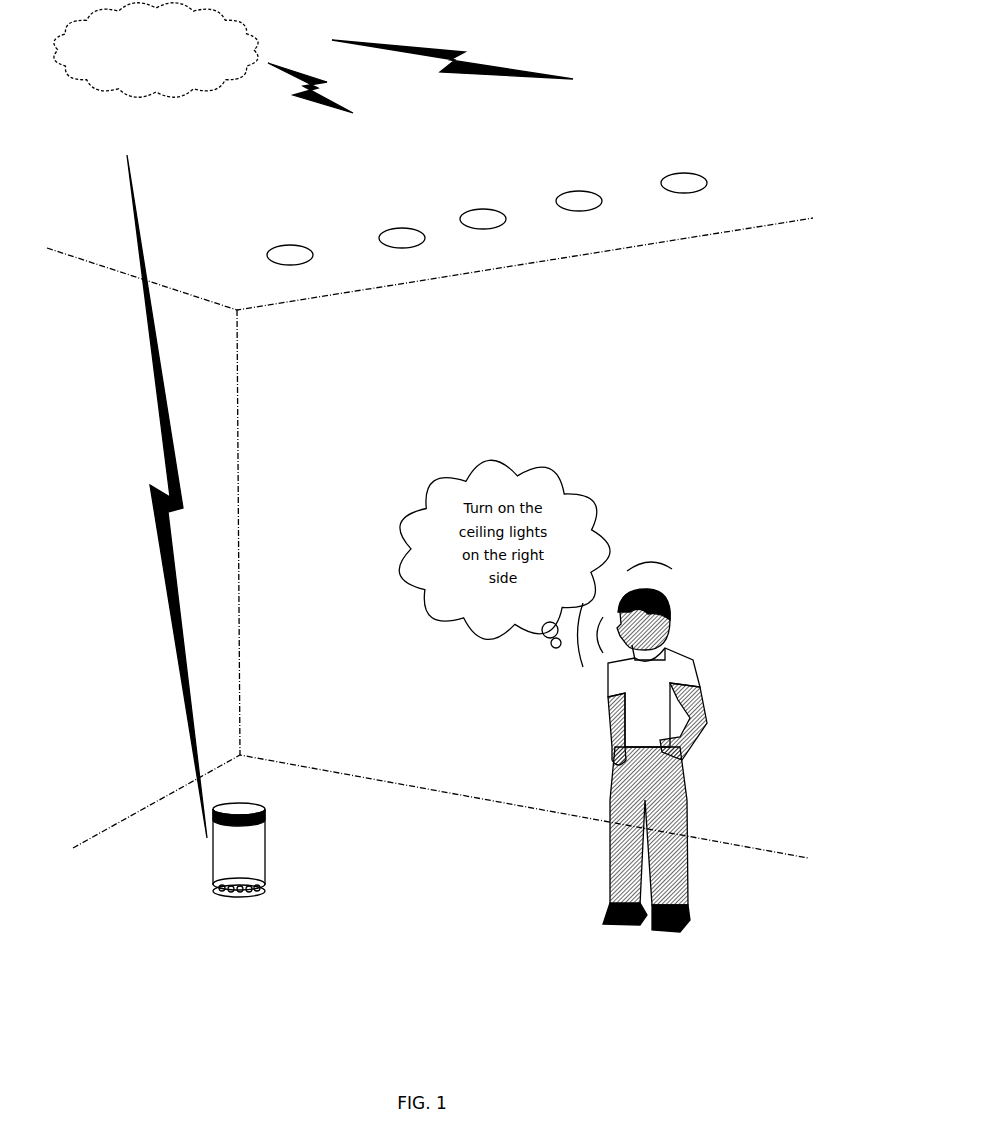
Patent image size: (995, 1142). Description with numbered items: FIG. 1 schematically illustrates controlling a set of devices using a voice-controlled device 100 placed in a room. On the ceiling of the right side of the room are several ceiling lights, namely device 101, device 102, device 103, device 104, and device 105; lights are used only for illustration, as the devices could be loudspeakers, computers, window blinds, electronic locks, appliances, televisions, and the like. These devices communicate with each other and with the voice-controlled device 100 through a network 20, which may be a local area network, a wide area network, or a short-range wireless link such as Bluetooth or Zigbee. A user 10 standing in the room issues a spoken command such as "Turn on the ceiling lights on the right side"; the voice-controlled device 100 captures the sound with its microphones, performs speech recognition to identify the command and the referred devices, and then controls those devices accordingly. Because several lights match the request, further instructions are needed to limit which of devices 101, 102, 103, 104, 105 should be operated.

The network 20 is at (156, 50).
The device 101 is at (267, 245).
The device 102 is at (363, 220).
The device 103 is at (463, 205).
The device 104 is at (557, 178).
The device 105 is at (667, 150).
The voice-controlled device 100 is at (240, 906).
The user 10 is at (713, 702).